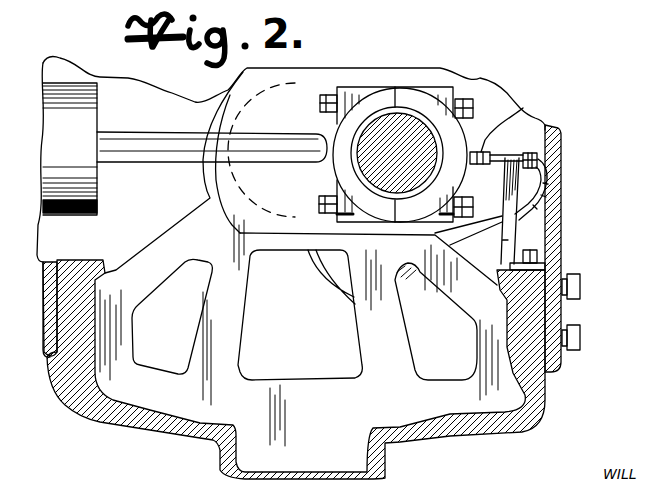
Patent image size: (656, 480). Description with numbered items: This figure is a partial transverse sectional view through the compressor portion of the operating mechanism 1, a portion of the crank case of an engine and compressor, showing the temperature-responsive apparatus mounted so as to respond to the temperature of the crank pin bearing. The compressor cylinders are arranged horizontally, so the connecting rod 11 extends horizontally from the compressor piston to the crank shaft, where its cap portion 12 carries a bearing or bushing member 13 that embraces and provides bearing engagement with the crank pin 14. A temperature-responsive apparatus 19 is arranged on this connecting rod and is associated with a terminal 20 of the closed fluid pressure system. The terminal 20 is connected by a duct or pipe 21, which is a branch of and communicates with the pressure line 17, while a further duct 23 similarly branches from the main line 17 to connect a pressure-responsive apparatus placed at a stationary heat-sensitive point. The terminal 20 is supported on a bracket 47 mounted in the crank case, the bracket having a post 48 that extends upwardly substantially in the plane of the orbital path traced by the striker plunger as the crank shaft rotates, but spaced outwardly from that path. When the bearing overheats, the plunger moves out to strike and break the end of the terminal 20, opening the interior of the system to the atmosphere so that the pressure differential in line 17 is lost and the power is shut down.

The operating mechanism 1 is at (551, 408).
The connecting rod 11 is at (145, 148).
The cap portion 12 is at (432, 103).
The bearing or bushing member 13 is at (369, 113).
The crank pin 14 is at (402, 120).
The fluid pressure line 17 is at (544, 188).
The temperature-responsive apparatus 19 is at (519, 108).
The terminal 20 is at (511, 155).
The duct or pipe 21 is at (538, 163).
The duct 23 is at (330, 283).
The bracket 47 is at (538, 258).
The post 48 is at (518, 224).